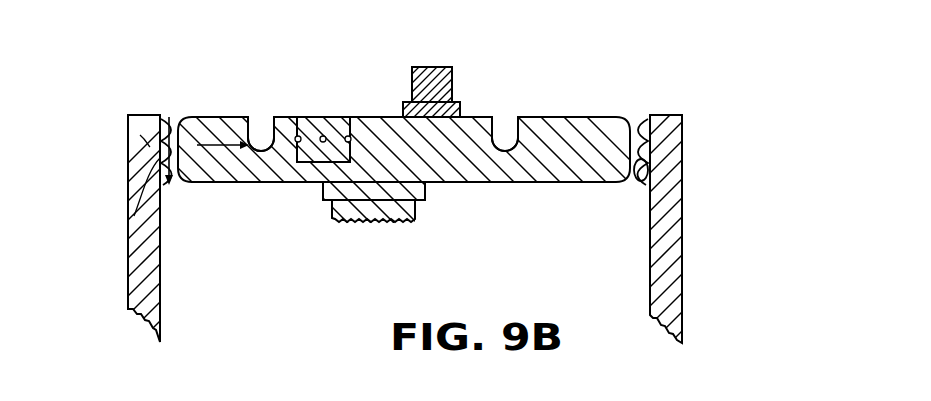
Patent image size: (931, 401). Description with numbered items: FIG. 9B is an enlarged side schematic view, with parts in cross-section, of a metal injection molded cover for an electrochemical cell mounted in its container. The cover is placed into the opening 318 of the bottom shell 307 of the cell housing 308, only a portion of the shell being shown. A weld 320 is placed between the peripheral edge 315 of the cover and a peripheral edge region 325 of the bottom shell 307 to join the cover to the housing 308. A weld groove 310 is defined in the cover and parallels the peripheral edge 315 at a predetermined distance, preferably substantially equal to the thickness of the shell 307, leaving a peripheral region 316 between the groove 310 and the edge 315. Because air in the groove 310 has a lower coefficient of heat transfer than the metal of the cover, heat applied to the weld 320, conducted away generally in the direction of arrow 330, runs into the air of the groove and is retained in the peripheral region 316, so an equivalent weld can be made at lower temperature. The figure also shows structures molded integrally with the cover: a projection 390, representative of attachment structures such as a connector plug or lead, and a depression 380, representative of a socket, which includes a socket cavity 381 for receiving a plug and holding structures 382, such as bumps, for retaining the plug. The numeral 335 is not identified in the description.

The bottom shell 307 is at (162, 267).
The cell housing 308 is at (130, 99).
The weld groove 310 is at (257, 115).
The peripheral edge 315 is at (166, 115).
The peripheral region 316 is at (202, 116).
The opening 318 is at (673, 180).
The weld 320 is at (163, 120).
The peripheral edge region 325 is at (150, 147).
The arrow 330 is at (209, 146).
The seal lip 335 is at (134, 216).
The depression 380 is at (334, 104).
The socket cavity 381 is at (300, 160).
The holding structures 382 is at (323, 144).
The projection 390 is at (438, 53).